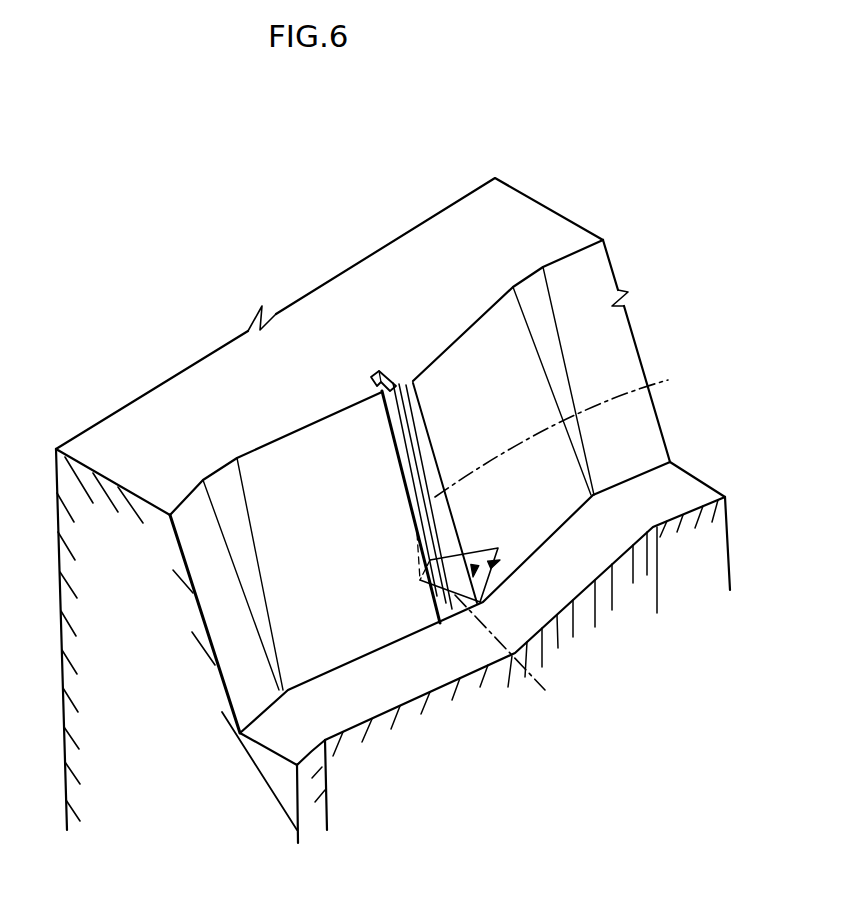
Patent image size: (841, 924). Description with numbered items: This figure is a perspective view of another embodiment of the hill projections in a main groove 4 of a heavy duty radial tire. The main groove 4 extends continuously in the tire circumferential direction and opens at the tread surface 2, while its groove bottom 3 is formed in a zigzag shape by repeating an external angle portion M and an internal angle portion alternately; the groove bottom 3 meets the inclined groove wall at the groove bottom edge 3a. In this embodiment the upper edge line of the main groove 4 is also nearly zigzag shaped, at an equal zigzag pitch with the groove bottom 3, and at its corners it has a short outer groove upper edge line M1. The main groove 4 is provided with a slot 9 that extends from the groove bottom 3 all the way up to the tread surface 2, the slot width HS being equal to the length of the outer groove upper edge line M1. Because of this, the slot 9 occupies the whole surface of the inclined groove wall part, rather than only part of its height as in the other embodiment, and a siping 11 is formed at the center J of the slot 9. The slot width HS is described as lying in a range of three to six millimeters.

The tread surface 2 is at (432, 250).
The groove bottom 3 is at (543, 603).
The groove bottom edge 3a is at (557, 537).
The main groove 4 is at (285, 733).
The slot 9 is at (466, 607).
The siping 11 is at (390, 382).
The outer groove upper edge line M1 is at (370, 377).
The slot width HS is at (473, 577).
The center of the slot J is at (560, 428).
The external angle portion M is at (513, 673).